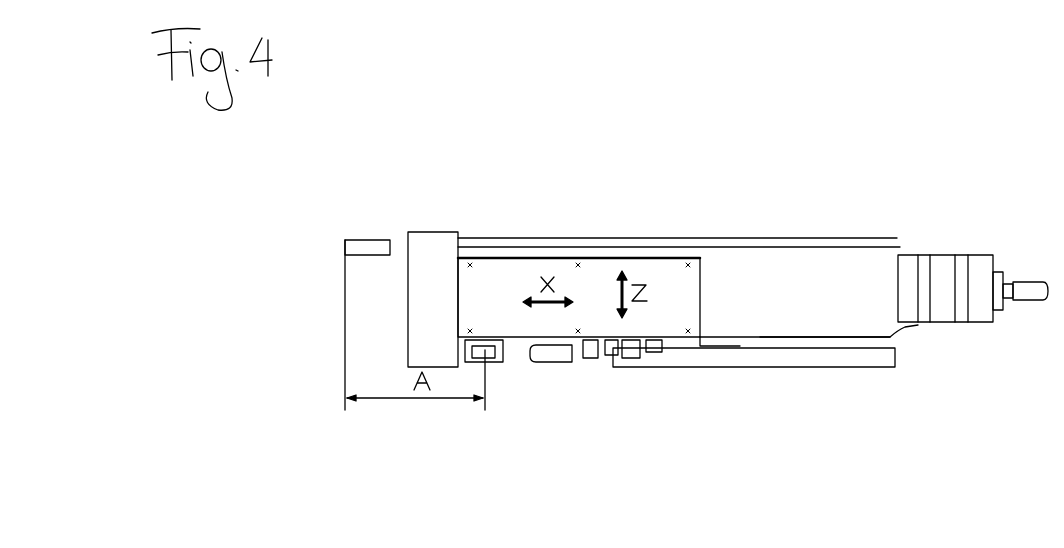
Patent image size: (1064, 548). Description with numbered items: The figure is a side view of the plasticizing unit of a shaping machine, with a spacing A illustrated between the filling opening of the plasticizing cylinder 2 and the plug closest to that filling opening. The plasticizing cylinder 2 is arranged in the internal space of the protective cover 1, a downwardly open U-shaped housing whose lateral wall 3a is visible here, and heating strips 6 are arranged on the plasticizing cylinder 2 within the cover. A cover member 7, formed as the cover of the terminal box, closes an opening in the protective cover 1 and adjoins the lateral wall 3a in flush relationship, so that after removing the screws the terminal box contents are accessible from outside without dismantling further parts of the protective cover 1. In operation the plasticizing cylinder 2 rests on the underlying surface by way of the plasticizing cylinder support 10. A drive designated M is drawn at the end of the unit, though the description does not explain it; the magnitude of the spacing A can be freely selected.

The protective cover 1 is at (940, 227).
The plasticizing cylinder 2 is at (957, 265).
The lateral wall 3a is at (828, 307).
The heating strips 6 is at (903, 310).
The cover member 7 is at (598, 312).
The plasticizing cylinder support 10 is at (723, 355).
The motor M is at (435, 252).